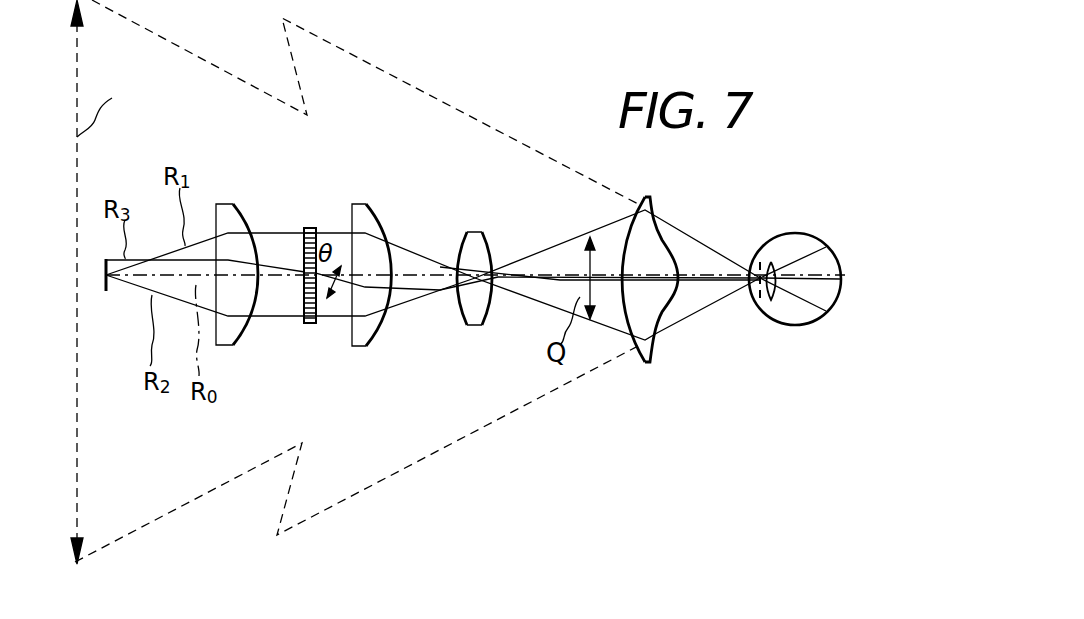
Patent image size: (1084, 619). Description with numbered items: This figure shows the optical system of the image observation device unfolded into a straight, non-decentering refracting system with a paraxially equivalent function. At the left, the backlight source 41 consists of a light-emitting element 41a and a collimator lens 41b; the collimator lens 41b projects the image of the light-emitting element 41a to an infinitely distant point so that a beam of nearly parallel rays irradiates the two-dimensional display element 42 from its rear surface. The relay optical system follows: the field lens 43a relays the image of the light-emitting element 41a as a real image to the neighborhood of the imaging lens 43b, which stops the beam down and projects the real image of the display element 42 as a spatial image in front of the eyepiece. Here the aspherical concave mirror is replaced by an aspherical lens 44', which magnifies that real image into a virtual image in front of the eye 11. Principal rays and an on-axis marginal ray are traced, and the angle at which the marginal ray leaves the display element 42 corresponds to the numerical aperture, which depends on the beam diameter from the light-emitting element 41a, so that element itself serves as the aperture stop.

The backlight source 41 is at (355, 282).
The light-emitting element 41a is at (108, 296).
The collimator lens 41b is at (232, 330).
The two-dimensional display element 42 is at (307, 328).
The field lens 43a is at (368, 340).
The imaging lens 43b is at (480, 320).
The aspherical lens 44' is at (642, 316).
The eye 11 is at (790, 318).